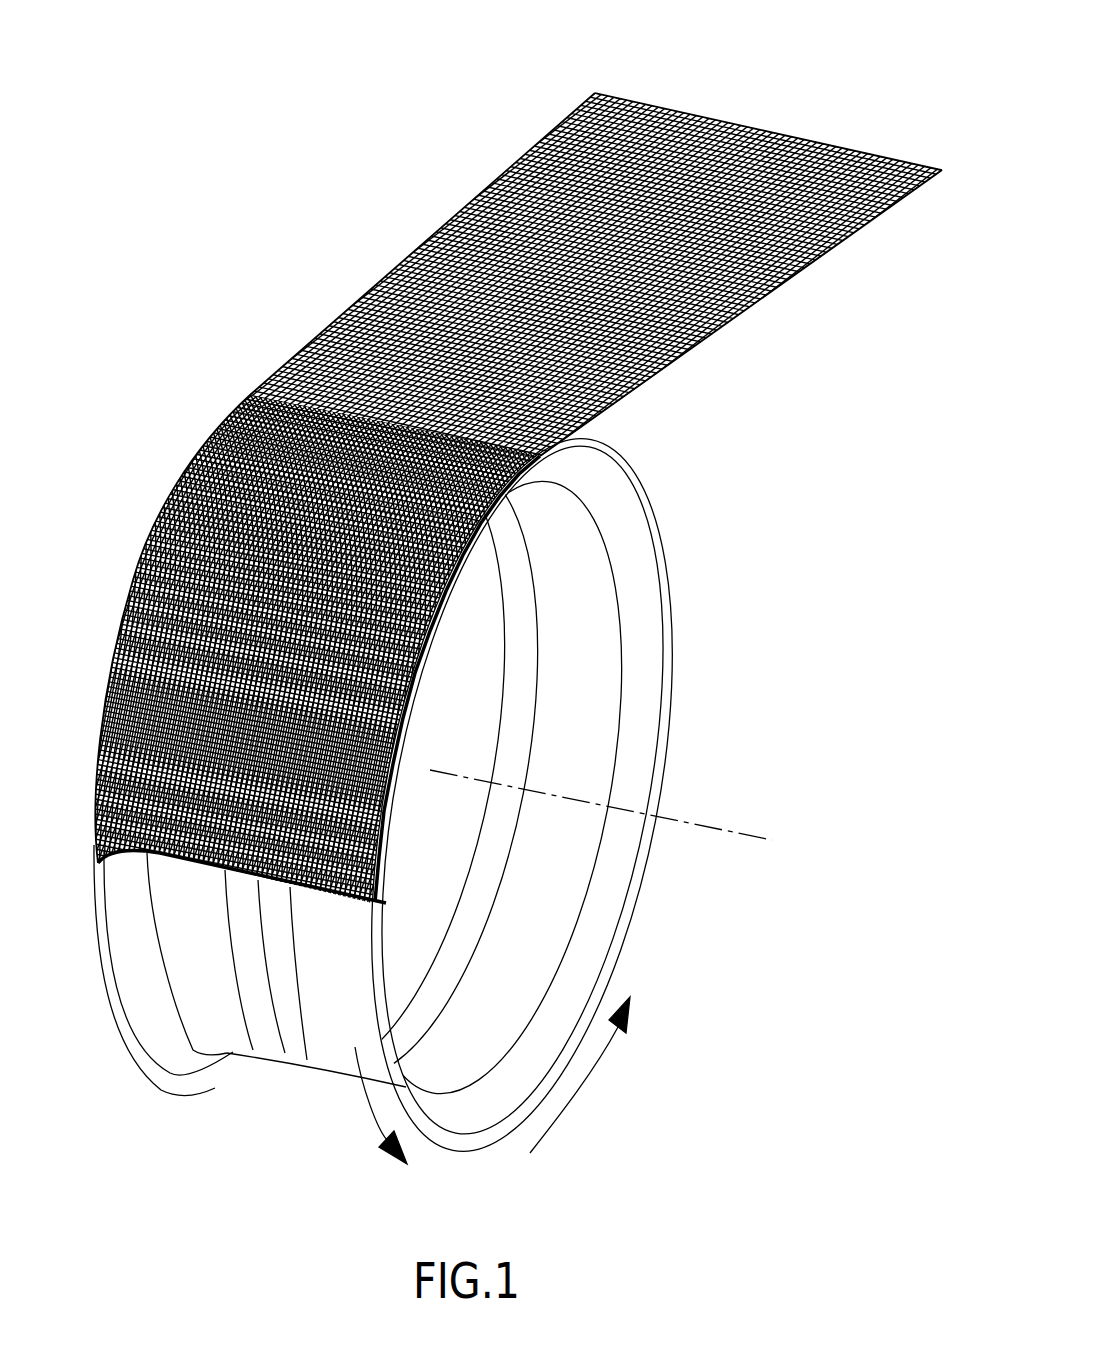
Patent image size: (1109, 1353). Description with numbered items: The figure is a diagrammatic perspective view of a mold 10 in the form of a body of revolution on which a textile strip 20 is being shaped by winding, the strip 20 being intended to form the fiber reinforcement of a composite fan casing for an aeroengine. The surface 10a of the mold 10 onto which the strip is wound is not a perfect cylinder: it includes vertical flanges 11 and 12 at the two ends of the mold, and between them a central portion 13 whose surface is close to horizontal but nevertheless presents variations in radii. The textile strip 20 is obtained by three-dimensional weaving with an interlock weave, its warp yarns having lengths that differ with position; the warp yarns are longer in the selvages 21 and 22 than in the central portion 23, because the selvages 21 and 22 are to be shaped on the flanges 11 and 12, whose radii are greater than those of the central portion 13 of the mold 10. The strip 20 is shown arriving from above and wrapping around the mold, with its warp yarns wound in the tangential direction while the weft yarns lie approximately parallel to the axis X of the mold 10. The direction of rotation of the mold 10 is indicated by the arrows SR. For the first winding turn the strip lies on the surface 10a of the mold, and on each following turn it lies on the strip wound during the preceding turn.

The mold 10 is at (412, 807).
The surface of the mold 10a is at (281, 1040).
The vertical flange 11 is at (132, 1073).
The vertical flange 12 is at (468, 1151).
The central portion of the mold 13 is at (245, 964).
The textile strip 20 is at (554, 592).
The selvage 21 is at (540, 153).
The selvage 22 is at (768, 320).
The central portion of the textile strip 23 is at (741, 166).
The axis of the mold X is at (757, 840).
The direction of rotation SR is at (366, 1102).